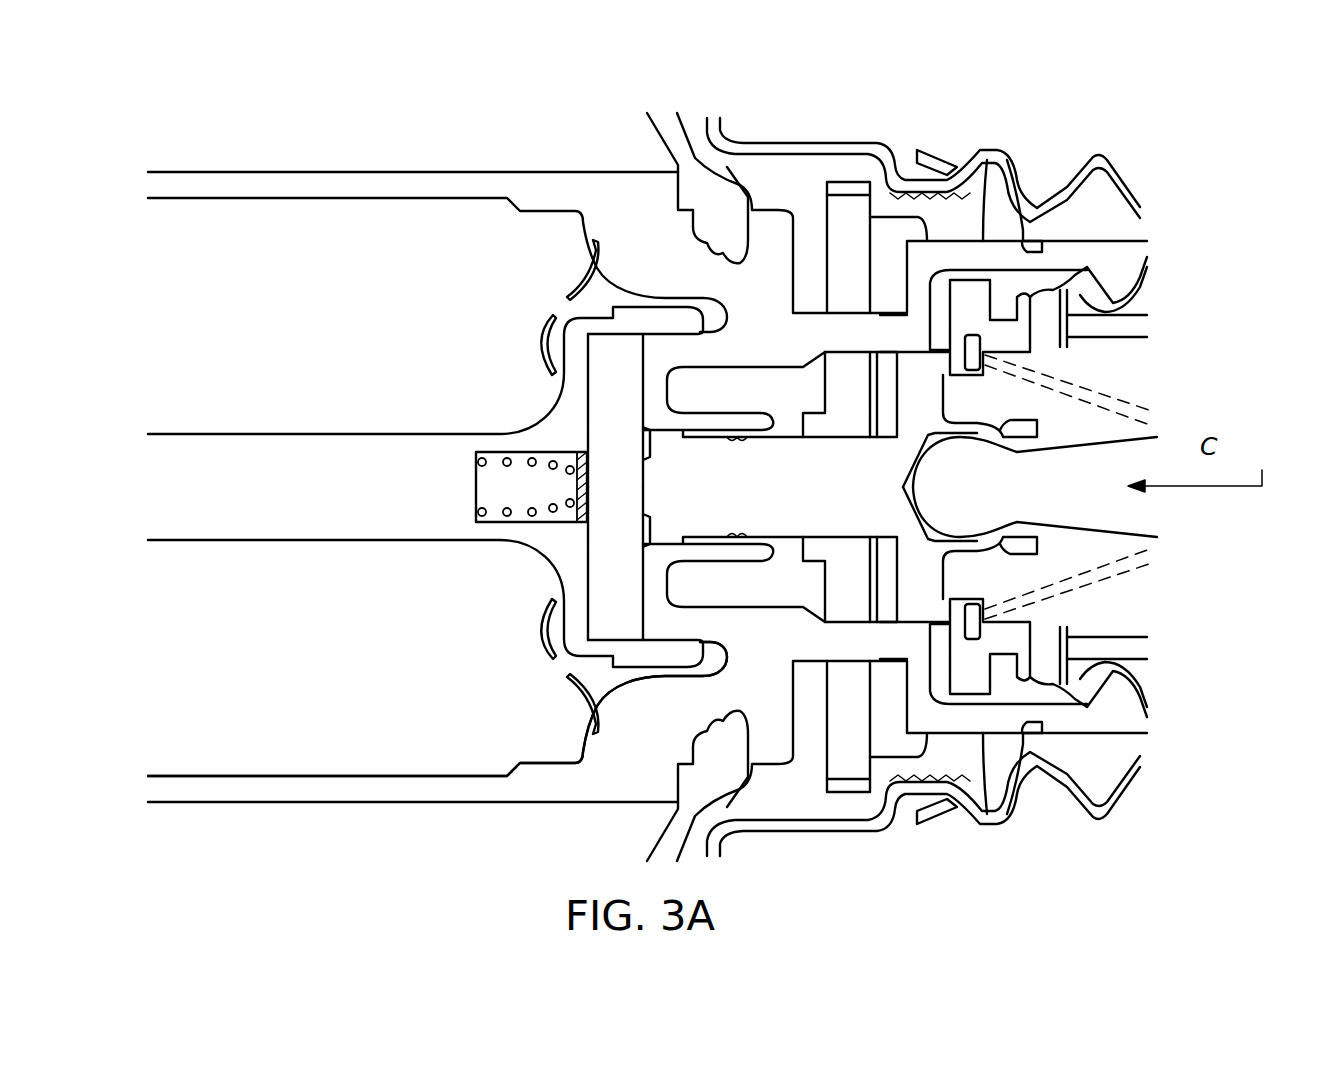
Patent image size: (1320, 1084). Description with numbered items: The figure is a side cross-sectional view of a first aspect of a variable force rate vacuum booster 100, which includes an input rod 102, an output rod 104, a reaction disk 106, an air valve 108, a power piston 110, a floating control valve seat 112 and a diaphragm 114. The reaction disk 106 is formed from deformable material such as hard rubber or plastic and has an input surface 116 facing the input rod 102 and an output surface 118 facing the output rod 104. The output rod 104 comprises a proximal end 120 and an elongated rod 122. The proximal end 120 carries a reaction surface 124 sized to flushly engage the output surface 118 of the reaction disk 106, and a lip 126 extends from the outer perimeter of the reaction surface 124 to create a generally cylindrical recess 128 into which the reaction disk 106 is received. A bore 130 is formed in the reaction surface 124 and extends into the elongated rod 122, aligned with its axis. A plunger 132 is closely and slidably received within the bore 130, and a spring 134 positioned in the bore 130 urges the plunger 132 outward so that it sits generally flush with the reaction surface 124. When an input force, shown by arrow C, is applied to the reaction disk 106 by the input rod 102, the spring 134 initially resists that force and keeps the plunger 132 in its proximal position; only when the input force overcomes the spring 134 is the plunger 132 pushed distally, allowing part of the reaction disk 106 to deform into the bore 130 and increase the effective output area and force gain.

The variable force rate vacuum booster 100 is at (1158, 128).
The input rod 102 is at (1097, 480).
The output rod 104 is at (351, 522).
The reaction disk 106 is at (600, 400).
The air valve 108 is at (810, 505).
The power piston 110 is at (770, 297).
The floating control valve seat 112 is at (968, 298).
The diaphragm 114 is at (578, 282).
The input surface 116 is at (645, 353).
The output surface 118 is at (597, 347).
The proximal end 120 is at (468, 563).
The elongated rod 122 is at (181, 522).
The reaction surface 124 is at (593, 585).
The lip 126 is at (653, 653).
The recess 128 is at (617, 427).
The bore 130 is at (525, 452).
The plunger 132 is at (583, 491).
The spring 134 is at (505, 464).